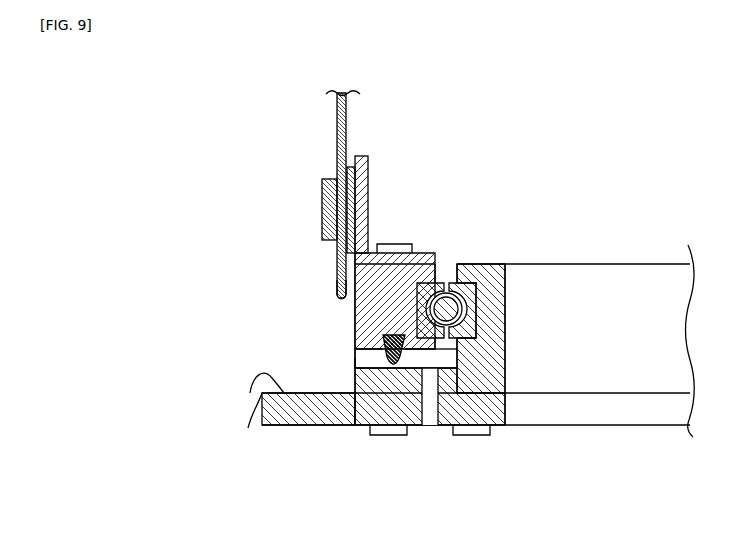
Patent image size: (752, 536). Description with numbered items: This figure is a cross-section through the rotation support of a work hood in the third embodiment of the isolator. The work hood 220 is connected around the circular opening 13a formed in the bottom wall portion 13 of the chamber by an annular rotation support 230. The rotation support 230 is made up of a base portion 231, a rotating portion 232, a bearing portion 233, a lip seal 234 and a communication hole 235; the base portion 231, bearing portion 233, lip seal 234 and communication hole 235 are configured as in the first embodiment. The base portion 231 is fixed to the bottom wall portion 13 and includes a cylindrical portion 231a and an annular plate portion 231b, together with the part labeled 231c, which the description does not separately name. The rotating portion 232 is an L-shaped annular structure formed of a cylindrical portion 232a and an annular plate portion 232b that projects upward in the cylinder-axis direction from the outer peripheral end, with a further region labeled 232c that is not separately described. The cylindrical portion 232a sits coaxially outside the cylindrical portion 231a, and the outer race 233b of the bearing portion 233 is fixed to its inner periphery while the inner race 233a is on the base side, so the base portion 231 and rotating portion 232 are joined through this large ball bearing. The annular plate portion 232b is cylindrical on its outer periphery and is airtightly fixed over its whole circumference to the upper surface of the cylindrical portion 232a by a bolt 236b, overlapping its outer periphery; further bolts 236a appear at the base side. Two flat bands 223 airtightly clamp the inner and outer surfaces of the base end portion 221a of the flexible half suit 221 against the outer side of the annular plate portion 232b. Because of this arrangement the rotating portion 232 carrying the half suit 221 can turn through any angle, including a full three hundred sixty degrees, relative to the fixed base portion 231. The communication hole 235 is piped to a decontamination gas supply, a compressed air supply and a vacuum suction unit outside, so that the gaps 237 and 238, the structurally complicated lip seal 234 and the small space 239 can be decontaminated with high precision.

The bottom wall portion 13 is at (463, 375).
The opening 13a is at (600, 461).
The work hood 220 is at (258, 173).
The half suit 221 is at (337, 131).
The base end portion 221a is at (337, 282).
The flat band 223 is at (349, 166).
The rotation support 230 is at (482, 125).
The base portion 231 is at (490, 374).
The cylindrical portion 231a is at (480, 318).
The annular plate portion 231b is at (367, 388).
The step surface of base member 231c is at (355, 372).
The rotating portion 232 is at (401, 271).
The cylindrical portion 232a is at (372, 306).
The annular plate portion 232b is at (368, 198).
The holding member recess 232c is at (419, 356).
The bearing portion 233 is at (507, 309).
The inner race 233a is at (470, 294).
The outer race 233b is at (470, 333).
The lip seal 234 is at (372, 362).
The communication hole 235 is at (430, 438).
The lower protrusion 236a is at (388, 437).
The bolt 236b is at (397, 243).
The gap 237 is at (448, 259).
The gap 238 is at (351, 362).
The small space 239 is at (449, 366).